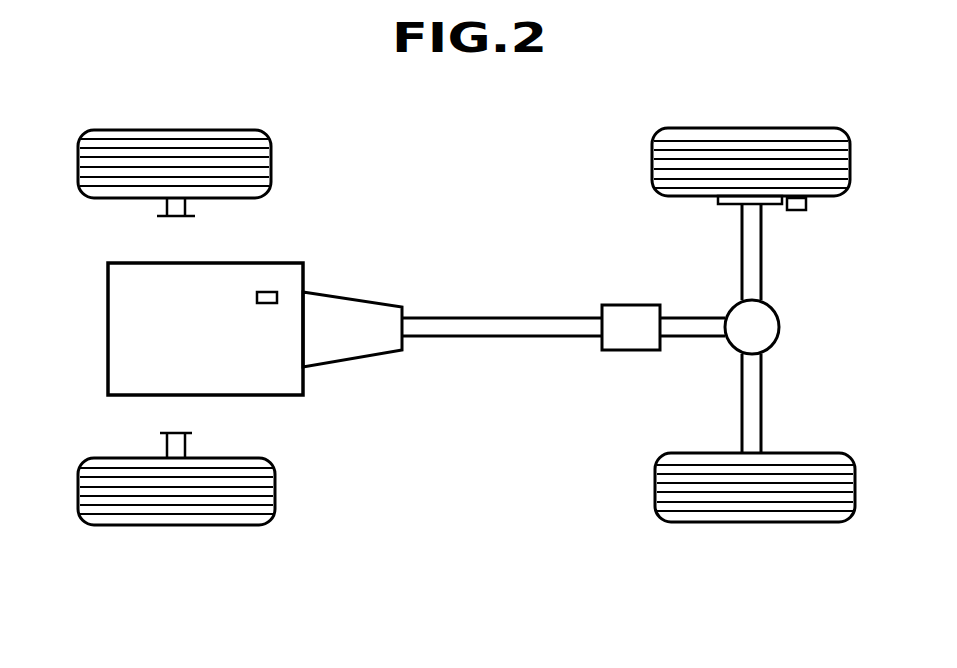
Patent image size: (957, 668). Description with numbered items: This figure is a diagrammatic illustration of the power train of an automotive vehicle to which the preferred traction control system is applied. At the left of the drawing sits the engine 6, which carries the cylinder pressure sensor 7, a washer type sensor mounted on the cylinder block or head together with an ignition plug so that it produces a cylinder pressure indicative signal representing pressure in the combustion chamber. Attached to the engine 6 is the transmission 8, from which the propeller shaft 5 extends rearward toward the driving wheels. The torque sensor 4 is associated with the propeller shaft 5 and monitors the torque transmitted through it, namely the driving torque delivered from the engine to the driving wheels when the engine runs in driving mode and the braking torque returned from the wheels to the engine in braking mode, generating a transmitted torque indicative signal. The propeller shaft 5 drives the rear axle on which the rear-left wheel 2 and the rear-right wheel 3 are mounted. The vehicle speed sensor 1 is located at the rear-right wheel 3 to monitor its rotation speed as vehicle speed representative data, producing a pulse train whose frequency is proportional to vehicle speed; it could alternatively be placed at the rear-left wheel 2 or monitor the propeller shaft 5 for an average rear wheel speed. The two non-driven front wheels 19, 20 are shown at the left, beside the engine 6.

The vehicle speed sensor 1 is at (797, 211).
The rear-left wheel 2 is at (803, 453).
The rear-right wheel 3 is at (745, 128).
The torque sensor 4 is at (633, 305).
The propeller shaft 5 is at (487, 318).
The engine 6 is at (263, 263).
The cylinder pressure sensor 7 is at (277, 297).
The transmission 8 is at (358, 347).
The front wheel 19 is at (112, 458).
The front wheel 20 is at (177, 130).